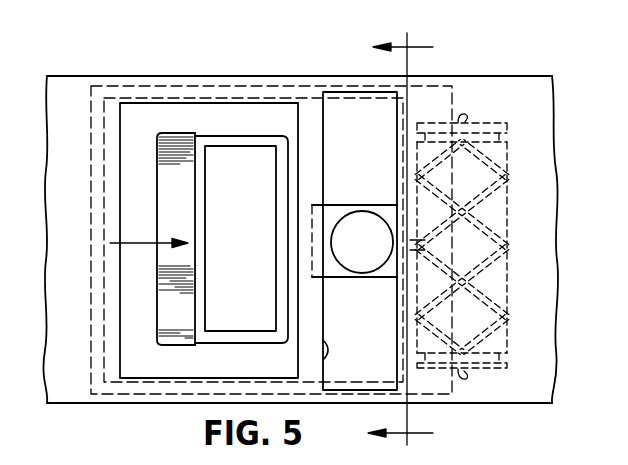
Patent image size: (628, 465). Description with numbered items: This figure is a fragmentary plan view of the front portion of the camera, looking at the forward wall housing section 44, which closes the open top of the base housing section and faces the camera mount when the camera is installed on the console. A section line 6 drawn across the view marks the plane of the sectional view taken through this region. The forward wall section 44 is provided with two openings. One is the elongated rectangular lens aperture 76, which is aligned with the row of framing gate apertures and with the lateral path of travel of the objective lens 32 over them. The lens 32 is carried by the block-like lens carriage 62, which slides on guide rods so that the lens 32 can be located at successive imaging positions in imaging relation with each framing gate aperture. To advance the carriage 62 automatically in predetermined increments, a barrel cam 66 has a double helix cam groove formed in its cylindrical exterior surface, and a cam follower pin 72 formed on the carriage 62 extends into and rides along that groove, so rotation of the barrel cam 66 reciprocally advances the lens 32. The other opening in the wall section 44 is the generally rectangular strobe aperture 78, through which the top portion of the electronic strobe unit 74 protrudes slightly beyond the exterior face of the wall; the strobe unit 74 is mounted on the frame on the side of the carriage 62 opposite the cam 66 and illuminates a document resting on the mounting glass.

The forward wall housing section 44 is at (537, 113).
The section line 6- 6 is at (391, 239).
The strobe aperture 78 is at (203, 104).
The electronic strobe unit 74 is at (238, 336).
The lens carriage 62 is at (387, 278).
The objective lens 32 is at (363, 260).
The lens aperture 76 is at (323, 357).
The barrel cam 66 is at (500, 283).
The cam follower pin 72 is at (410, 245).